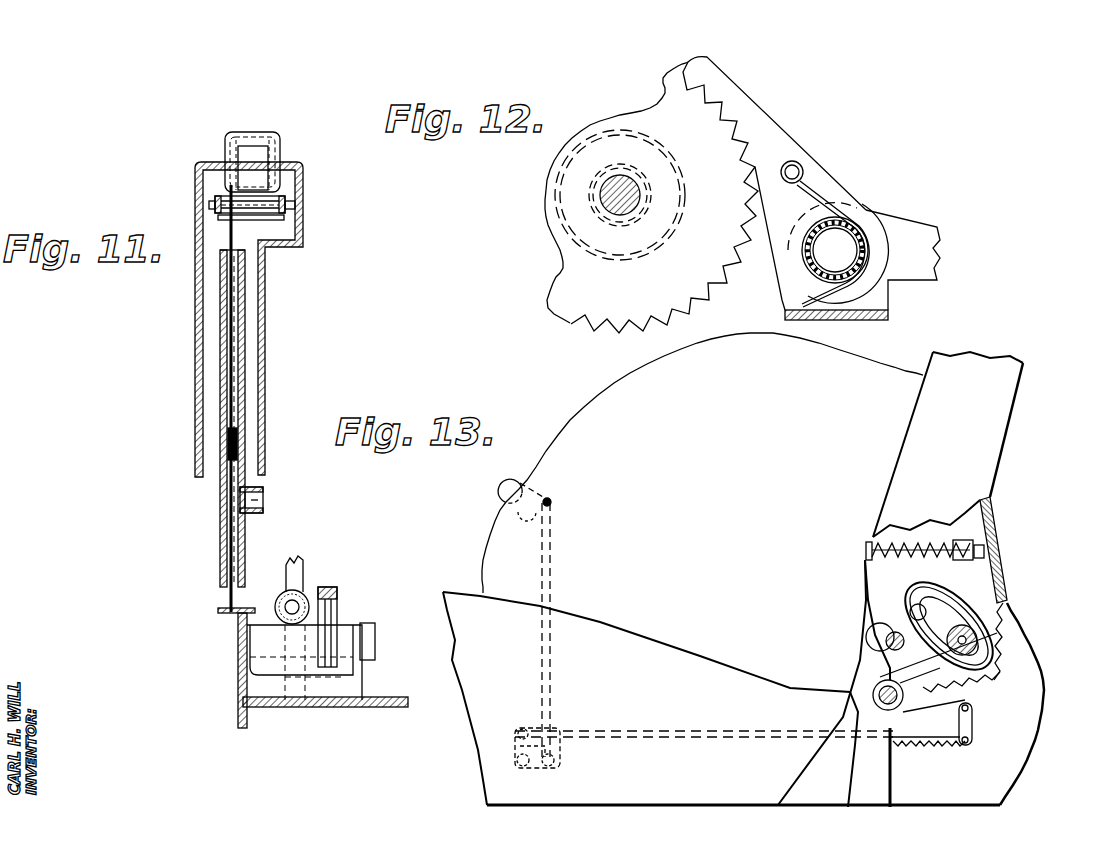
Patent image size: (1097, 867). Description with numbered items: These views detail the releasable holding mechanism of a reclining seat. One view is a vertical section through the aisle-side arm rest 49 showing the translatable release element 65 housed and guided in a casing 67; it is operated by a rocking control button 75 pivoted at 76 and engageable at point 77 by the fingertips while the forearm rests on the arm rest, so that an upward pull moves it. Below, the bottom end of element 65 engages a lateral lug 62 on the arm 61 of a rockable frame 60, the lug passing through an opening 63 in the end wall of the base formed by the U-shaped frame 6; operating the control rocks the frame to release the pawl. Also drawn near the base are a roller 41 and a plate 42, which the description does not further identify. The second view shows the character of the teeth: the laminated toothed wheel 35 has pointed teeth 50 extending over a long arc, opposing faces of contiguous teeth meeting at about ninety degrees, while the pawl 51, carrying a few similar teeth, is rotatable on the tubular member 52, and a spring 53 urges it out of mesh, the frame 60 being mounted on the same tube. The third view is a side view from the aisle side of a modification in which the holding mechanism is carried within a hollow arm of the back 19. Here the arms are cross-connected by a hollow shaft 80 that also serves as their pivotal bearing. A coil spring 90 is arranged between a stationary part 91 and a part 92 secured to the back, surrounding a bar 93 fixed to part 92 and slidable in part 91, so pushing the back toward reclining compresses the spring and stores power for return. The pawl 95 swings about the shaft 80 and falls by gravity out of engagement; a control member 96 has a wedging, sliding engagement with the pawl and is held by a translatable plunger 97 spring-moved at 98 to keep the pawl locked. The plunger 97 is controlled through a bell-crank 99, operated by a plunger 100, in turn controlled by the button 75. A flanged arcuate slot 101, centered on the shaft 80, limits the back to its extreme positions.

In FIG. 12, the U-shaped frame 6 is at (873, 300).
In FIG. 13, the back 19 is at (993, 470).
In FIG. 12, the toothed member or wheel 35 is at (583, 287).
In FIG. 11, the roller 41 is at (302, 597).
In FIG. 11, the blade 42 is at (293, 567).
In FIG. 11, the arm rest 49 is at (199, 308).
In FIG. 13, the arm rest 49 is at (570, 427).
In FIG. 12, the pointed teeth 50 is at (690, 300).
In FIG. 11, the pawl 51 is at (245, 703).
In FIG. 12, the pawl 51 is at (748, 108).
In FIG. 11, the tubular member 52 is at (257, 637).
In FIG. 12, the tubular member 52 is at (859, 229).
In FIG. 12, the spring 53 is at (810, 196).
In FIG. 11, the frame 60 is at (250, 698).
In FIG. 12, the arm 61 is at (908, 243).
In FIG. 11, the lateral lug 62 is at (223, 612).
In FIG. 11, the opening 63 is at (250, 663).
In FIG. 11, the translatable release element 65 is at (222, 392).
In FIG. 11, the casing 67 is at (222, 353).
In FIG. 11, the rocking control button 75 is at (272, 153).
In FIG. 13, the rocking control button 75 is at (507, 501).
In FIG. 11, the pivot 76 is at (299, 207).
In FIG. 13, the pivot 76 is at (520, 499).
In FIG. 13, the engagement point 77 is at (505, 505).
In FIG. 13, the hollow shaft 80 is at (880, 693).
In FIG. 13, the coil spring 90 is at (917, 547).
In FIG. 13, the stationary part 91 is at (980, 550).
In FIG. 13, the part secured to the back 92 is at (870, 563).
In FIG. 13, the bar 93 is at (987, 552).
In FIG. 13, the pawl 95 is at (920, 692).
In FIG. 13, the control member 96 is at (998, 678).
In FIG. 13, the translatable plunger 97 is at (903, 750).
In FIG. 13, the spring 98 is at (912, 746).
In FIG. 13, the bell-crank 99 is at (518, 750).
In FIG. 13, the plunger 100 is at (548, 612).
In FIG. 13, the flanged arcuate opening or slot 101 is at (953, 623).